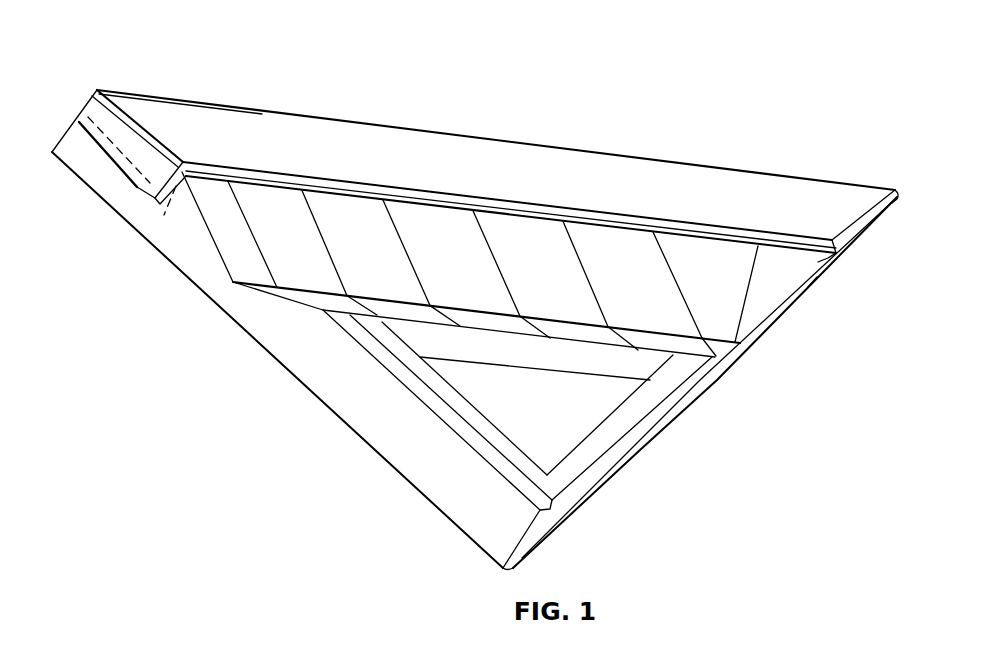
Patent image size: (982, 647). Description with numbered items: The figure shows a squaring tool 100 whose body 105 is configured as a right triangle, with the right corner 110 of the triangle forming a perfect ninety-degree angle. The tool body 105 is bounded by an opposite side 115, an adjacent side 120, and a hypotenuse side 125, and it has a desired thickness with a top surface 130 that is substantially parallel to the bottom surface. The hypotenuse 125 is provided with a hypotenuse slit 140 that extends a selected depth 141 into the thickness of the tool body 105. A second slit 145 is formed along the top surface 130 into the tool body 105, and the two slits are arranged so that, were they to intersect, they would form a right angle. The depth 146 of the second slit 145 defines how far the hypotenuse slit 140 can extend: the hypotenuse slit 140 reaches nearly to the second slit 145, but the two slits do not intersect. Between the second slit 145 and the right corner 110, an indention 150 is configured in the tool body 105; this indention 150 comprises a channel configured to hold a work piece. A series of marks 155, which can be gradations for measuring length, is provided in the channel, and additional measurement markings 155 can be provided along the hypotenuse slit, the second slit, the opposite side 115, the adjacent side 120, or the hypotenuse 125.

The squaring tool 100 is at (136, 38).
The body 105 is at (117, 346).
The right corner 110 is at (489, 562).
The opposite side 115 is at (324, 416).
The adjacent side 120 is at (639, 462).
The hypotenuse side 125 is at (742, 167).
The top surface 130 is at (513, 166).
The hypotenuse slit 140 is at (99, 165).
The selected depth 141 is at (99, 128).
The second slit 145 is at (149, 205).
The depth of the second slit 146 is at (156, 219).
The indention 150 is at (770, 303).
The marks 155 is at (236, 262).